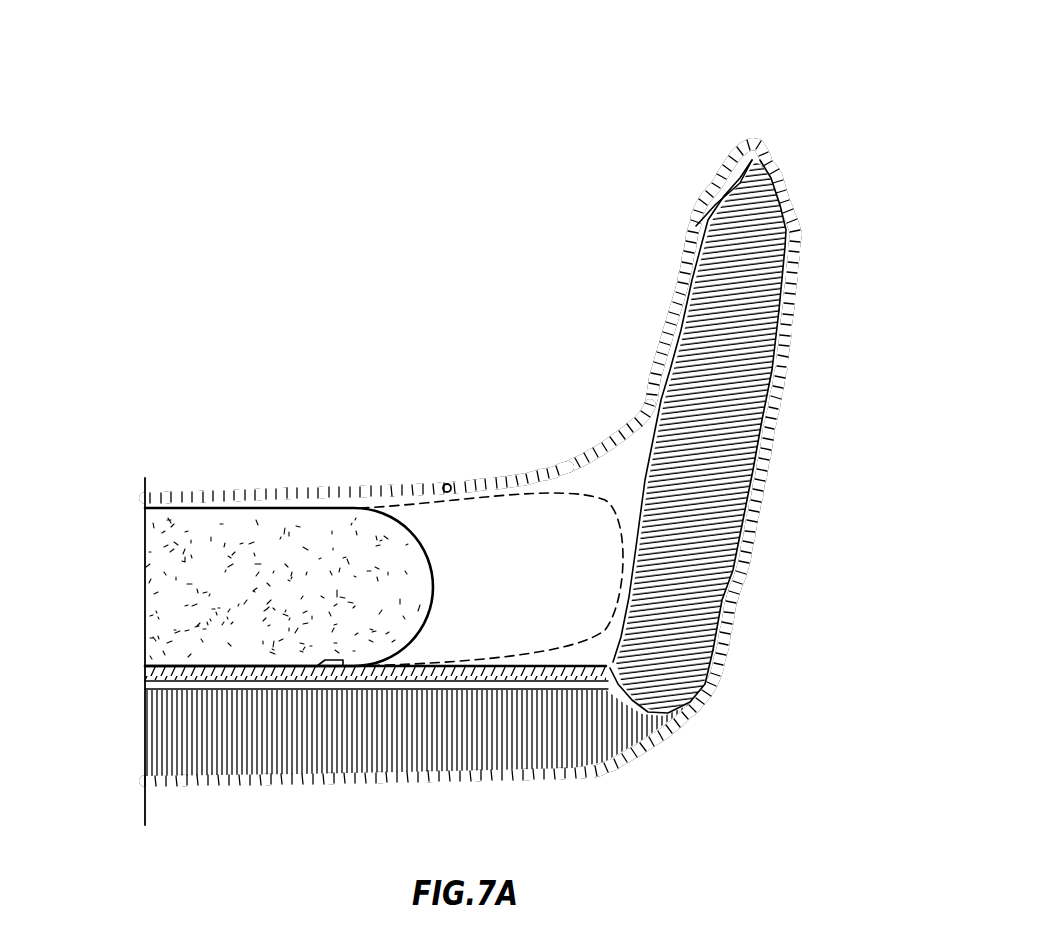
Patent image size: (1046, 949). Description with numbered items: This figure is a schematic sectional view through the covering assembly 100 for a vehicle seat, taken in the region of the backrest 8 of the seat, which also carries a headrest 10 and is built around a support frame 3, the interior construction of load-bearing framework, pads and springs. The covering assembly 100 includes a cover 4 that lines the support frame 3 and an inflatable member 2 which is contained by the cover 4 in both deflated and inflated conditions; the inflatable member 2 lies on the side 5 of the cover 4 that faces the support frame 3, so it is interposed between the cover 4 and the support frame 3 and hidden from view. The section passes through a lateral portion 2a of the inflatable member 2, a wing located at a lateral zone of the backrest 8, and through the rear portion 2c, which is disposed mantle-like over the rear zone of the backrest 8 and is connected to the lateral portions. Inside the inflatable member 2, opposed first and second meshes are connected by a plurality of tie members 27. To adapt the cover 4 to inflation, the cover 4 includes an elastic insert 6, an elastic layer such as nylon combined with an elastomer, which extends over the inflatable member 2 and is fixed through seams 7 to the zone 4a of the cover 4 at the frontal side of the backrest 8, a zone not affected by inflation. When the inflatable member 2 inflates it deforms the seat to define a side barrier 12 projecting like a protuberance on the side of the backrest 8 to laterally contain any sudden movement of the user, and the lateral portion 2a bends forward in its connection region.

The inflatable member 2 is at (137, 757).
The lateral portion 2a is at (747, 548).
The rear portion 2c is at (580, 782).
The support frame 3 is at (133, 516).
The cover 4 is at (628, 432).
The zone of the cover 4a is at (313, 484).
The side of the cover 5 is at (650, 360).
The elastic insert 6 is at (730, 150).
The seams 7 is at (447, 484).
The backrest 8 is at (503, 552).
The headrest 10 is at (247, 549).
The side barrier 12 is at (673, 242).
The tie members 27 is at (747, 265).
The covering assembly 100 is at (328, 792).